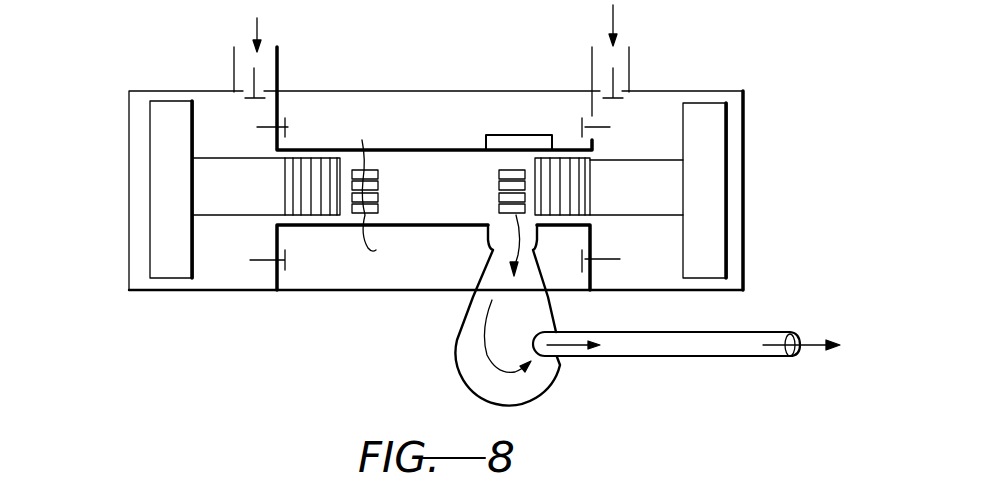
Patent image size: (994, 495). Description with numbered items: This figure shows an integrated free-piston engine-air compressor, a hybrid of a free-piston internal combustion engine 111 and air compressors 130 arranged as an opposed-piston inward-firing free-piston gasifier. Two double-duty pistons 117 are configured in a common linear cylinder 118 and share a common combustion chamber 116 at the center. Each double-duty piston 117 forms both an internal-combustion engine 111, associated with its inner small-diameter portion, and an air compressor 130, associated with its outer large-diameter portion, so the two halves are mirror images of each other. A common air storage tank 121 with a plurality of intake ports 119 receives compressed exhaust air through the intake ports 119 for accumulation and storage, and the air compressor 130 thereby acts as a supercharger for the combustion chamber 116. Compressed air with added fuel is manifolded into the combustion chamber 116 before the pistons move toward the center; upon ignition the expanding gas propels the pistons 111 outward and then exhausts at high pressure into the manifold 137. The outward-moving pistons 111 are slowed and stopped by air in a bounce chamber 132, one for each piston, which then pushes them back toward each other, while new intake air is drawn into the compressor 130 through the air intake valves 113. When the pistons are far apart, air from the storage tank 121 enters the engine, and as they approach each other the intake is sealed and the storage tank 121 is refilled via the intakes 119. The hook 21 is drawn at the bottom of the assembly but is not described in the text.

The hook 21 is at (530, 393).
The free-piston internal combustion engine 111 is at (476, 166).
The air intake valve 113 is at (257, 18).
The common combustion chamber 116 is at (437, 203).
The double-duty piston 117 is at (197, 291).
The linear cylinder 118 is at (335, 288).
The intake port 119 is at (286, 127).
The common air storage tank 121 is at (380, 103).
The air compressor 130 is at (230, 104).
The bounce chamber 132 is at (140, 203).
The manifold 137 is at (808, 342).